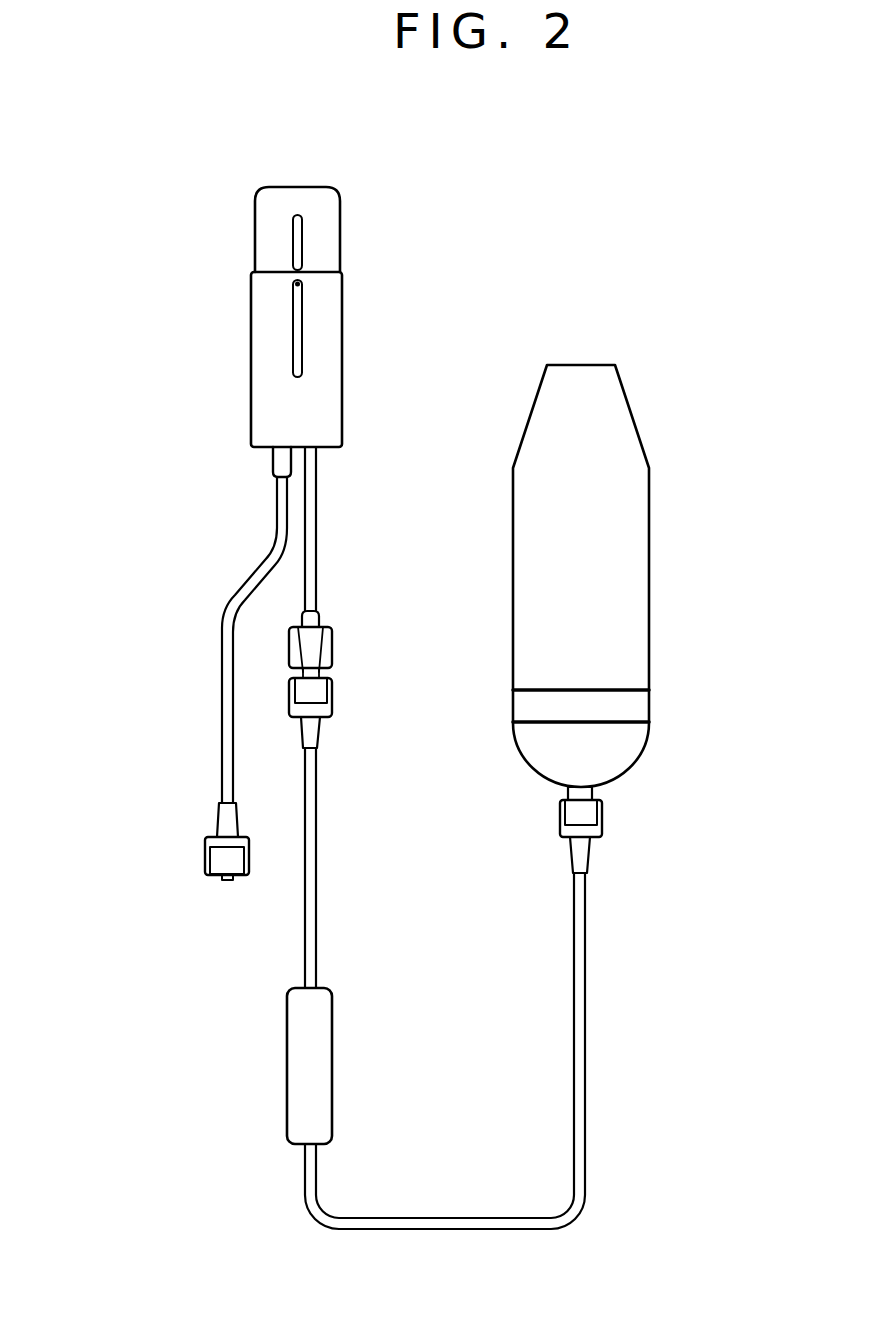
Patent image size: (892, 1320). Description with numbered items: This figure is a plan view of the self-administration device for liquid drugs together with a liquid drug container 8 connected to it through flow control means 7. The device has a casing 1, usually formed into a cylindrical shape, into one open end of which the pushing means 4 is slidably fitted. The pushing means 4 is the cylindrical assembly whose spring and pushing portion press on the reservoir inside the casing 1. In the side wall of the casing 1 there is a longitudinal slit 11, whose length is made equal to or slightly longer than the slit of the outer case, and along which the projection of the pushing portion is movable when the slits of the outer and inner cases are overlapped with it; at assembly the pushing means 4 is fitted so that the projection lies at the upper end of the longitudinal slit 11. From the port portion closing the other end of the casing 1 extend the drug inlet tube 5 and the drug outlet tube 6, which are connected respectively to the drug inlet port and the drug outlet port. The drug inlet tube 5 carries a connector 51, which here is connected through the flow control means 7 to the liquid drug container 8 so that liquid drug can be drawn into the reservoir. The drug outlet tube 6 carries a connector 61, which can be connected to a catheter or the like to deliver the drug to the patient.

The casing 1 is at (249, 338).
The pushing means 4 is at (340, 222).
The longitudinal slit 11 is at (285, 326).
The drug inlet tube 5 is at (317, 520).
The connector 51 is at (332, 653).
The drug outlet tube 6 is at (220, 657).
The connector 61 is at (203, 847).
The flow control means 7 is at (285, 1080).
The liquid drug container 8 is at (650, 580).